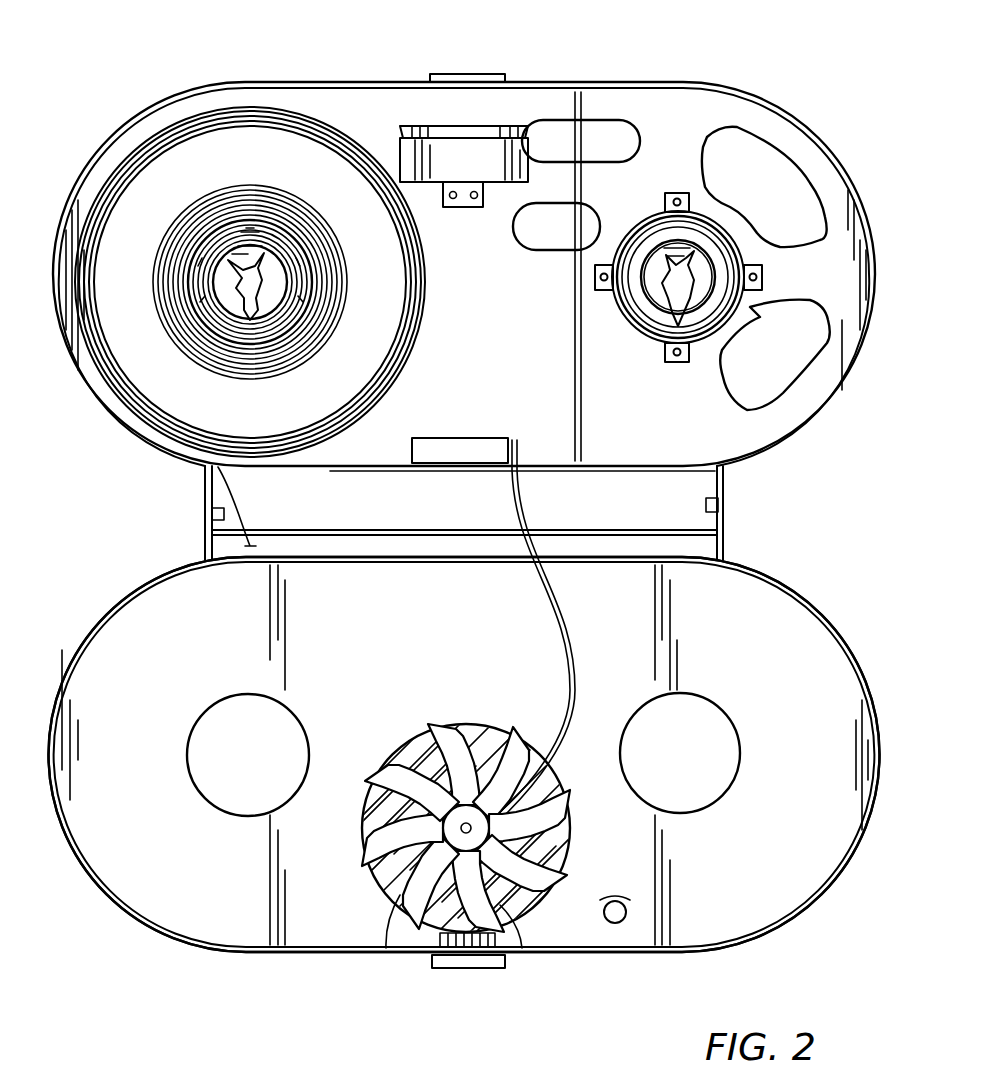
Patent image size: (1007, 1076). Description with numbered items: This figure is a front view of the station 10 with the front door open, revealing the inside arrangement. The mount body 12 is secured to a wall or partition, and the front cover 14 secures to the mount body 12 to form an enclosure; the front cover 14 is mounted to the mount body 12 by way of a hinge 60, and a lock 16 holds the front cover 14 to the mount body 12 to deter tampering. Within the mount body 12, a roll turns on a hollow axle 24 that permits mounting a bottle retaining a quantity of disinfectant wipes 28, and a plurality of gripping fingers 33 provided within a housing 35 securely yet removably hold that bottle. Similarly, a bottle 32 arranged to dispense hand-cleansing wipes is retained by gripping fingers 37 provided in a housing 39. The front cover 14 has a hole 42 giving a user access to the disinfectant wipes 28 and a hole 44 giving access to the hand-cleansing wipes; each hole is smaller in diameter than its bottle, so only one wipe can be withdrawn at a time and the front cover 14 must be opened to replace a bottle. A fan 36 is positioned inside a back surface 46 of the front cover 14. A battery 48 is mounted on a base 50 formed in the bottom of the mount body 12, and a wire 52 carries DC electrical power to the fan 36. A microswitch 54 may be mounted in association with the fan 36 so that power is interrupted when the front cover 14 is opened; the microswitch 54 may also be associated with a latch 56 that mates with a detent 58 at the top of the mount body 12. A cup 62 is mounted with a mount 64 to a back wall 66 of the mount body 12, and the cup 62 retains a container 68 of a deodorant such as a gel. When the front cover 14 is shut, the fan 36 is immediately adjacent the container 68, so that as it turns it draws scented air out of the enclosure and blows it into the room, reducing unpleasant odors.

The station 10 is at (812, 516).
The mount body 12 is at (858, 312).
The front cover 14 is at (808, 868).
The lock 16 is at (626, 922).
The axle 24 is at (236, 287).
The disinfectant wipes 28 is at (236, 320).
The bottle 32 is at (690, 270).
The gripping fingers 33 is at (213, 268).
The housing 35 is at (303, 296).
The fan 36 is at (405, 915).
The gripping fingers 37 is at (732, 246).
The housing 39 is at (630, 233).
The hole 42 is at (298, 720).
The hole 44 is at (738, 718).
The back surface 46 is at (193, 902).
The battery 48 is at (488, 445).
The base 50 is at (622, 466).
The wire 52 is at (563, 614).
The microswitch 54 is at (510, 948).
The latch 56 is at (462, 968).
The detent 58 is at (497, 74).
The hinge 60 is at (212, 518).
The cup 62 is at (522, 150).
The mount 64 is at (480, 208).
The back wall 66 is at (690, 126).
The container 68 is at (435, 136).